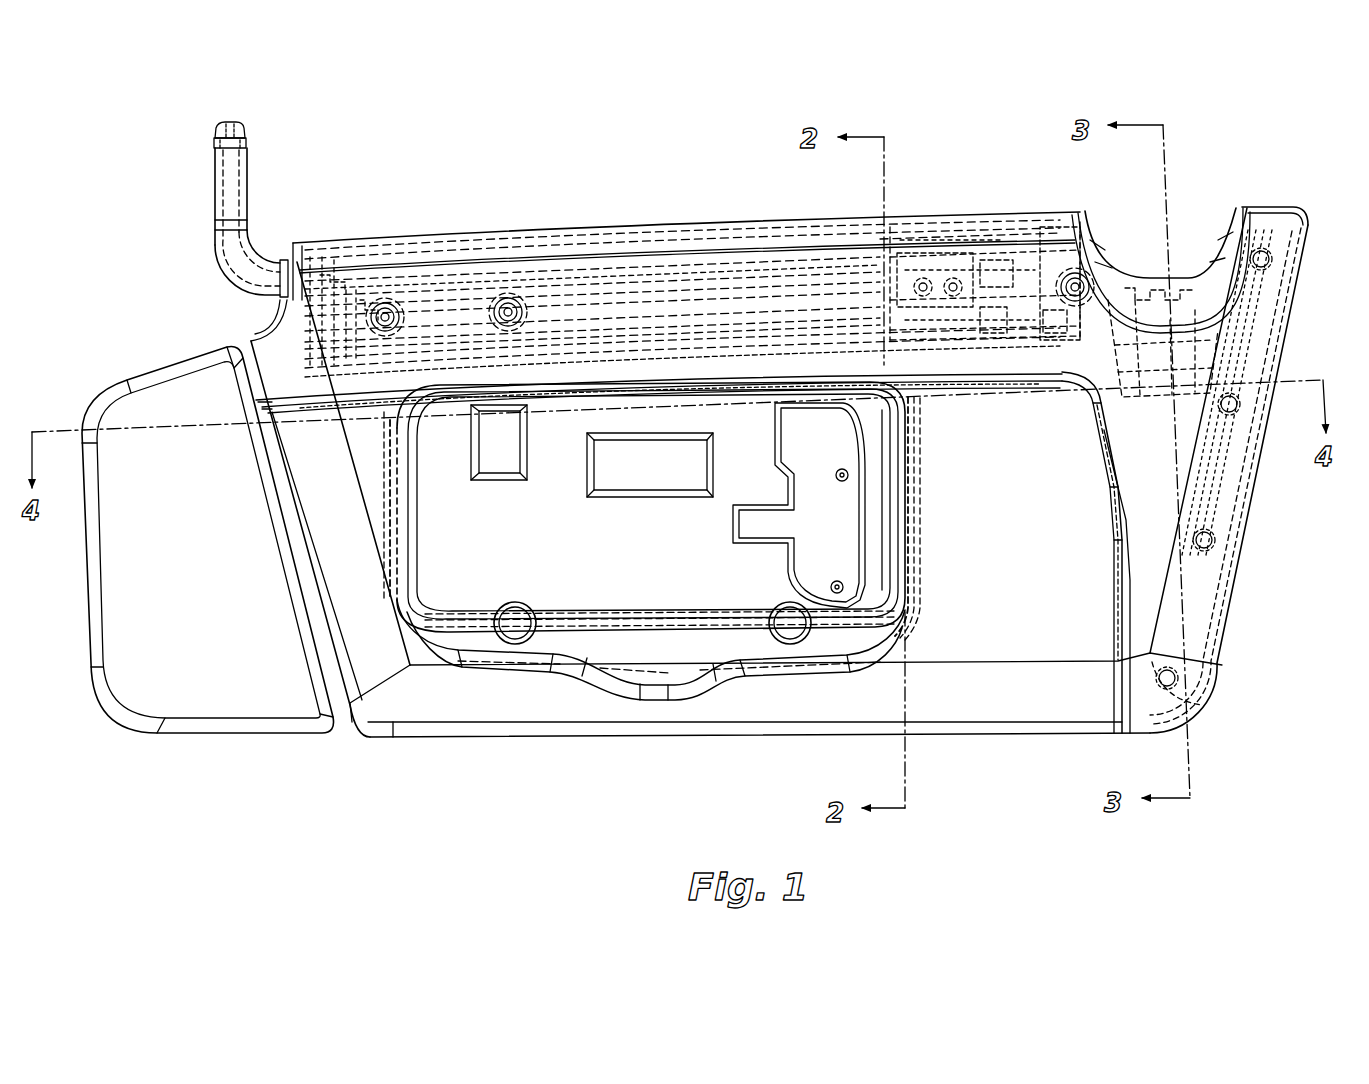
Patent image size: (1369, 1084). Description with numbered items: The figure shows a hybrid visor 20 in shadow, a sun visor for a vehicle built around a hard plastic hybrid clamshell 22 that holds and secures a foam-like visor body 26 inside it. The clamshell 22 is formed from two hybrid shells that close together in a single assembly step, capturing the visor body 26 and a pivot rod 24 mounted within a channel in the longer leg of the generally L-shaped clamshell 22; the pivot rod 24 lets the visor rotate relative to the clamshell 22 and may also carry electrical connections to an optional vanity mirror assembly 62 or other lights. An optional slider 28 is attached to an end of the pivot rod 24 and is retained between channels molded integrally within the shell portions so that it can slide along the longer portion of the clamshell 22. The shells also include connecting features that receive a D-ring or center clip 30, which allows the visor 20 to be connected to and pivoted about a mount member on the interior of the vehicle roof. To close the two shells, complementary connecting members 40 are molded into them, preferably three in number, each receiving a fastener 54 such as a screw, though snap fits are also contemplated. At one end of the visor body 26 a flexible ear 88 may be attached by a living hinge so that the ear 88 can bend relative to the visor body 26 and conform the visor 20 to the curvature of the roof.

The hybrid visor 20 is at (450, 803).
The hybrid clamshell 22 is at (977, 215).
The pivot rod 24 is at (276, 262).
The visor body 26 is at (723, 700).
The slider 28 is at (870, 217).
The D-ring or center clip 30 is at (1190, 270).
The connecting member 40 is at (393, 307).
The fastener 54 is at (383, 303).
The vanity mirror assembly 62 is at (580, 657).
The flexible ear 88 is at (207, 700).